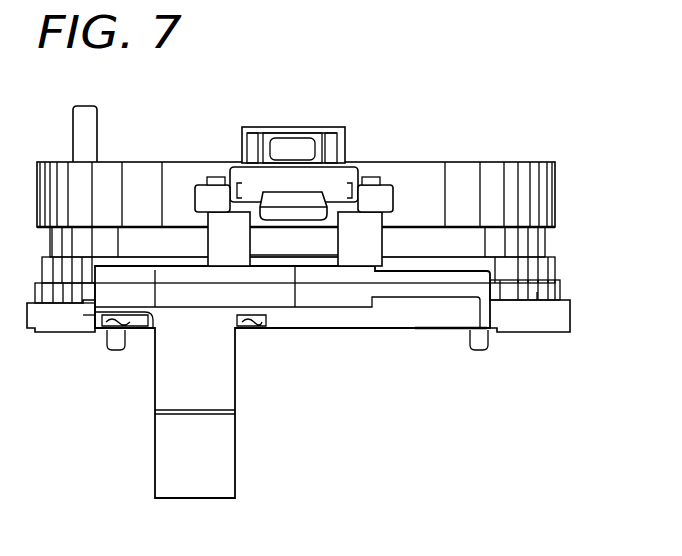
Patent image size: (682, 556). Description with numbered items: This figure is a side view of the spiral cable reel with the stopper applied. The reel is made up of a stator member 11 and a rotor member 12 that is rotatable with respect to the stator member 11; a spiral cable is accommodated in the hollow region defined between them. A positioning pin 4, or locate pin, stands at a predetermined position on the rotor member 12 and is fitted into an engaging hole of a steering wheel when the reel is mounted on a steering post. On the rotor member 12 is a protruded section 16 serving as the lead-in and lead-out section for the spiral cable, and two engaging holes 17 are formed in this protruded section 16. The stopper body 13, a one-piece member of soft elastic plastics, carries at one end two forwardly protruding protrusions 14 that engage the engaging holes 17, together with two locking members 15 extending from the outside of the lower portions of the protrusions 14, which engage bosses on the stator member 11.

The positioning pin 4 is at (80, 133).
The stator member 11 is at (543, 270).
The rotor member 12 is at (530, 200).
The stopper body 13 is at (300, 215).
The protrusions 14 is at (256, 154).
The locking members 15 is at (192, 185).
The protruded section 16 is at (252, 126).
The engaging holes 17 is at (328, 127).